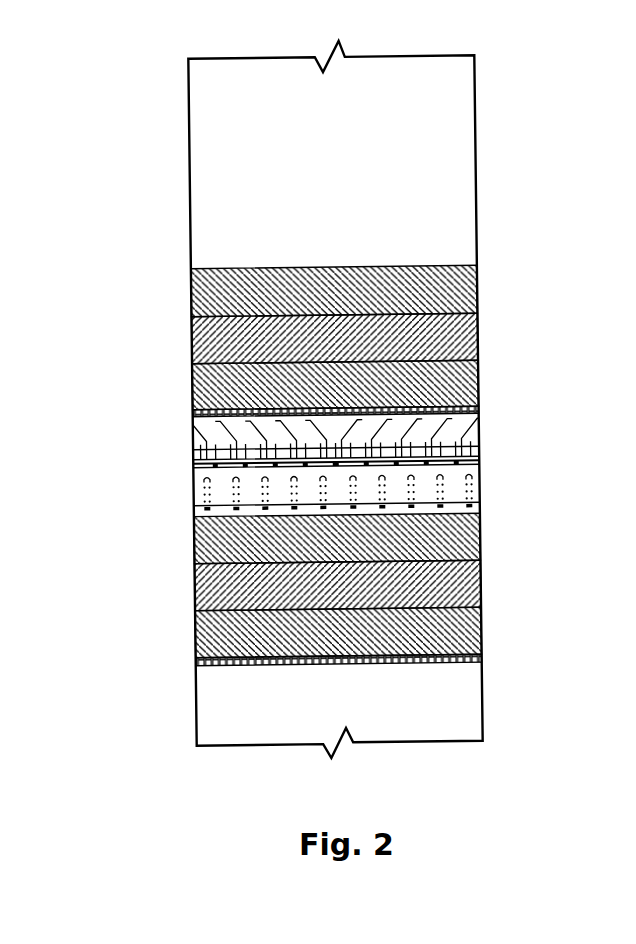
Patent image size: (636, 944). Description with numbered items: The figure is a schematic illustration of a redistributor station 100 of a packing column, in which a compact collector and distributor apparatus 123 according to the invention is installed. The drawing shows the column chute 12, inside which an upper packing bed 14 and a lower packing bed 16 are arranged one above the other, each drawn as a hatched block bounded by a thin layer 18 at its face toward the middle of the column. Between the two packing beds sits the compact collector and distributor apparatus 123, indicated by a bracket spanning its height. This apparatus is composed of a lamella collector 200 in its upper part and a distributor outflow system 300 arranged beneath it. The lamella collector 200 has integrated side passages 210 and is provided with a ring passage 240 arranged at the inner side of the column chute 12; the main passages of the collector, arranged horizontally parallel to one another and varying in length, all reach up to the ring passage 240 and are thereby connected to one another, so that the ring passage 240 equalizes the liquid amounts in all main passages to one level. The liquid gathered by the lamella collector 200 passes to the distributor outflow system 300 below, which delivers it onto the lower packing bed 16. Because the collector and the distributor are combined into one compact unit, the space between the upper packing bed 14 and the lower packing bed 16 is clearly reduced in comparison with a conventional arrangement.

The redistributor station 100 is at (112, 328).
The column chute 12 is at (476, 138).
The upper packing bed 14 is at (477, 285).
The lower packing bed 16 is at (480, 570).
The electrode layer 18 is at (477, 393).
The compact collector and distributor apparatus 123 is at (173, 512).
The lamella collector 200 is at (225, 432).
The ring passage 240 is at (467, 443).
The integrated side passages 210 is at (455, 452).
The distributor outflow system 300 is at (452, 489).